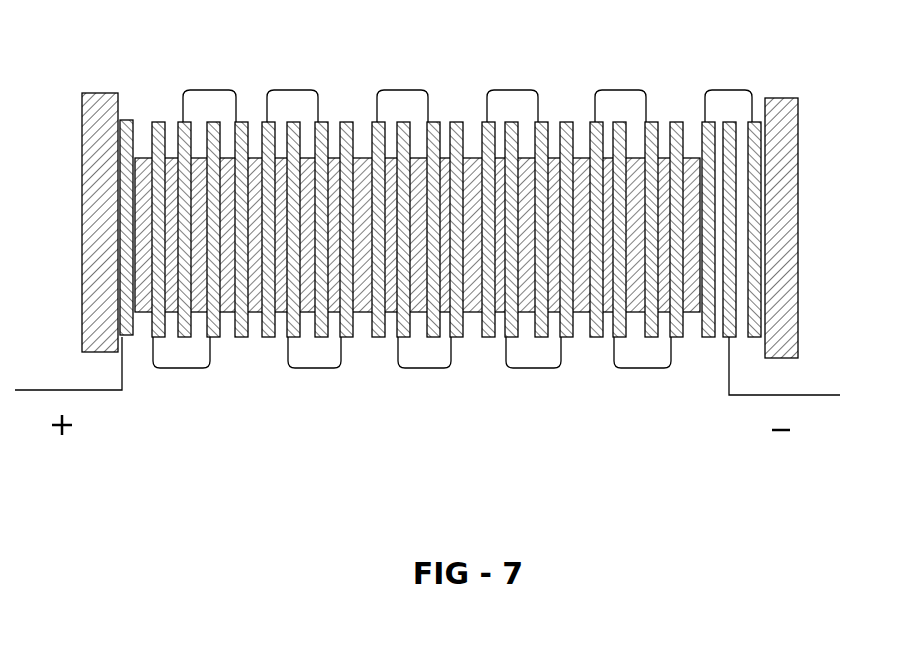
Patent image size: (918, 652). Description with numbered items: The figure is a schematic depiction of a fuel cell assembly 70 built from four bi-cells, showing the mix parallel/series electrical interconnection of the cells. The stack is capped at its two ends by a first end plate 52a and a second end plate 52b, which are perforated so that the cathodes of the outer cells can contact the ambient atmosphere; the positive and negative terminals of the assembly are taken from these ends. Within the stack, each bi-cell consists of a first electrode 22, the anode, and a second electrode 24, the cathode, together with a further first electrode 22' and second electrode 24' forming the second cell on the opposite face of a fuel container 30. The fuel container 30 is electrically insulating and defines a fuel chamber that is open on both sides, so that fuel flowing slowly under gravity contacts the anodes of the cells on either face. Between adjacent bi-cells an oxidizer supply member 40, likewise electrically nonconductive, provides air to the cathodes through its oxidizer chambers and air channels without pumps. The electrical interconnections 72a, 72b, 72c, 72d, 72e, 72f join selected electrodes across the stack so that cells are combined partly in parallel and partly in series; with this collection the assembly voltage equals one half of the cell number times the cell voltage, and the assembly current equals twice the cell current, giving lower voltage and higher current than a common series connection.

The fuel cell assembly 70 is at (448, 405).
The first end plate 52a is at (82, 222).
The second end plate 52b is at (798, 193).
The first electrode 22 is at (140, 278).
The first electrode 22' is at (202, 280).
The second electrode 24 is at (166, 265).
The second electrode 24' is at (224, 265).
The fuel container 30 is at (165, 330).
The oxidizer supply member 40 is at (222, 333).
The electrical interconnection 72a is at (209, 90).
The electrical interconnection 72b is at (296, 90).
The electrical interconnection 72c is at (406, 90).
The electrical interconnection 72d is at (514, 90).
The electrical interconnection 72e is at (622, 90).
The electrical interconnection 72f is at (729, 90).